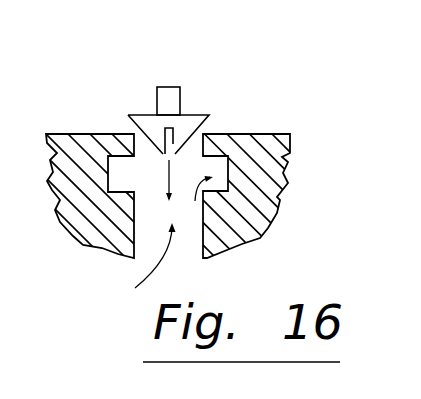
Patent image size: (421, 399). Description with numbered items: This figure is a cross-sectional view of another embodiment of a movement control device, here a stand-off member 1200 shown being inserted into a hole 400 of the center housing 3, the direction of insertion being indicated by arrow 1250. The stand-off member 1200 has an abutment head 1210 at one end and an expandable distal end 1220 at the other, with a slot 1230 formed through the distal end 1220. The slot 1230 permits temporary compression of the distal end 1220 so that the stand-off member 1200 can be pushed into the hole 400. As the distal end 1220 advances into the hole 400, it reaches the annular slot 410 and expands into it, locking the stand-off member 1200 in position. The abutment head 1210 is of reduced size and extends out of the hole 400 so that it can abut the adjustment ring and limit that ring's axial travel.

The stand-off member 1200 is at (256, 90).
The abutment head 1210 is at (175, 100).
The expandable distal end 1220 is at (203, 127).
The slot 1230 is at (171, 142).
The arrow 1250 is at (119, 157).
The center housing 3 is at (283, 180).
The hole 400 is at (126, 234).
The annular slot 410 is at (260, 238).